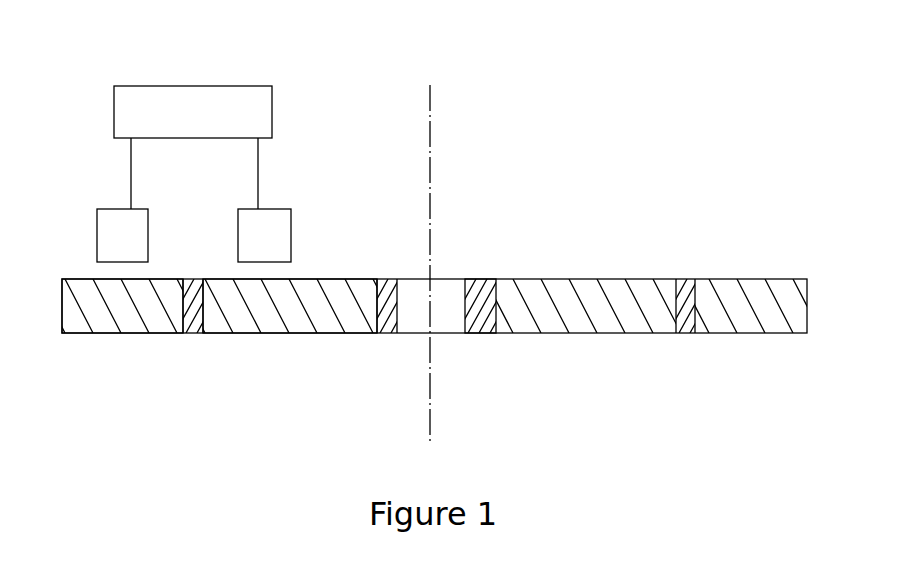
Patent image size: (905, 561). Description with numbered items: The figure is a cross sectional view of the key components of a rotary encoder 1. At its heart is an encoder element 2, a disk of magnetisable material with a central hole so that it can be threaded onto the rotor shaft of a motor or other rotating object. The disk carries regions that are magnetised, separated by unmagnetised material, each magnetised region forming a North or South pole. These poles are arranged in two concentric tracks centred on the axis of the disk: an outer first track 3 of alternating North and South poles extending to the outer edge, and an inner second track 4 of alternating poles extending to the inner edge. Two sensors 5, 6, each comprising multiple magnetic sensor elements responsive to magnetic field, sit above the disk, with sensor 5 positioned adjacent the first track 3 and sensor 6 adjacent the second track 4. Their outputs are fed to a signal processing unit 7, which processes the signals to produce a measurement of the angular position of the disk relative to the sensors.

The rotary encoder 1 is at (429, 282).
The encoder element 2 is at (475, 278).
The first track 3 is at (123, 322).
The second track 4 is at (295, 322).
The sensor 5 is at (97, 230).
The sensor 6 is at (292, 230).
The signal processing unit 7 is at (212, 86).